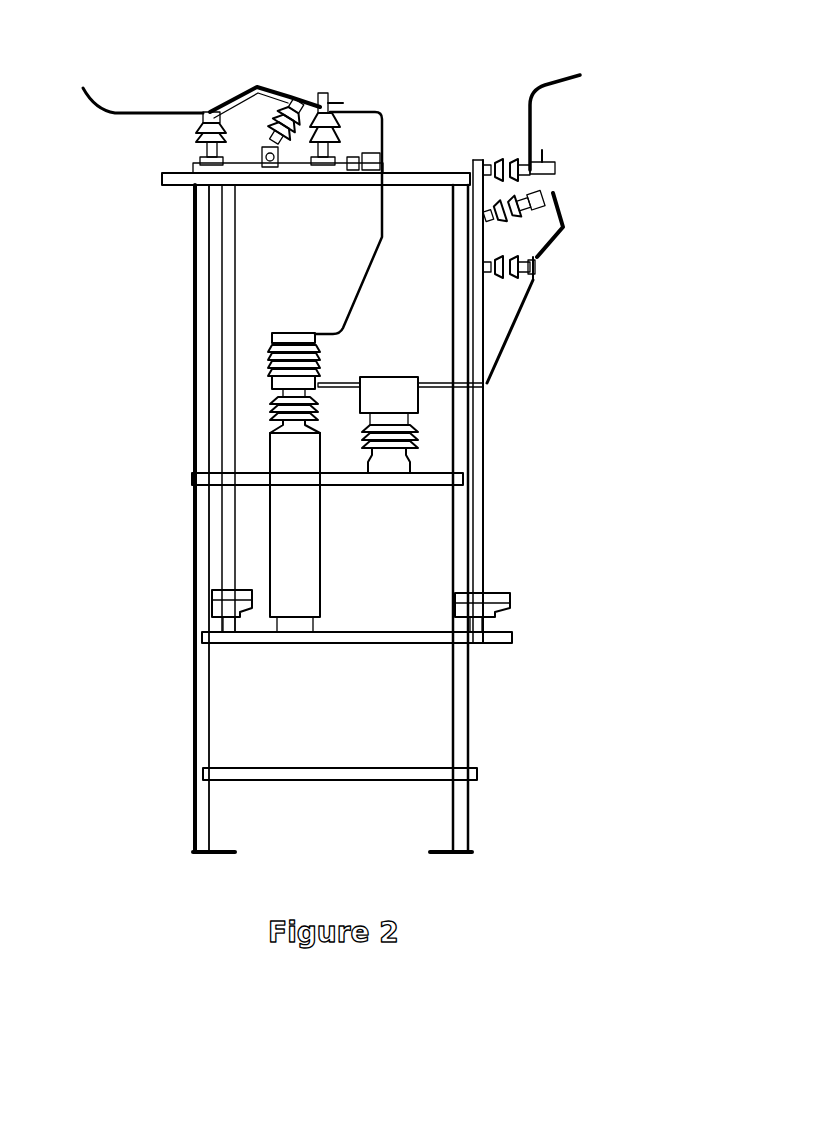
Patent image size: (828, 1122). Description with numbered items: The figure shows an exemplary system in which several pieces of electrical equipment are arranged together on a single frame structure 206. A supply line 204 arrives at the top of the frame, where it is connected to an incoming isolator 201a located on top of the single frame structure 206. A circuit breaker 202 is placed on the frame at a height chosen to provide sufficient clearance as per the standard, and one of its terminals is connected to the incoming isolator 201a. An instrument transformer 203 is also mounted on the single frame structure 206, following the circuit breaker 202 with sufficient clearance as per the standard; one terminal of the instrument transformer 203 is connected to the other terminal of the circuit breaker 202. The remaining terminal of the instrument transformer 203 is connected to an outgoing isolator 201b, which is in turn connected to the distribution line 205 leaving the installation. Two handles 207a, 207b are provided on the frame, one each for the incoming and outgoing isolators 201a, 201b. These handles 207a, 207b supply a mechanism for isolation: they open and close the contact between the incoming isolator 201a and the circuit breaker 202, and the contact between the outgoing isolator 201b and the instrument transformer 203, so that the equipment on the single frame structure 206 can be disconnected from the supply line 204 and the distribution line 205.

The incoming isolator 201a is at (303, 93).
The outgoing isolator 201b is at (553, 193).
The circuit breaker 202 is at (265, 363).
The instrument transformer 203 is at (387, 385).
The supply line 204 is at (96, 97).
The distribution line 205 is at (565, 72).
The single frame structure 206 is at (191, 440).
The handle 207a is at (250, 590).
The handle 207b is at (497, 593).